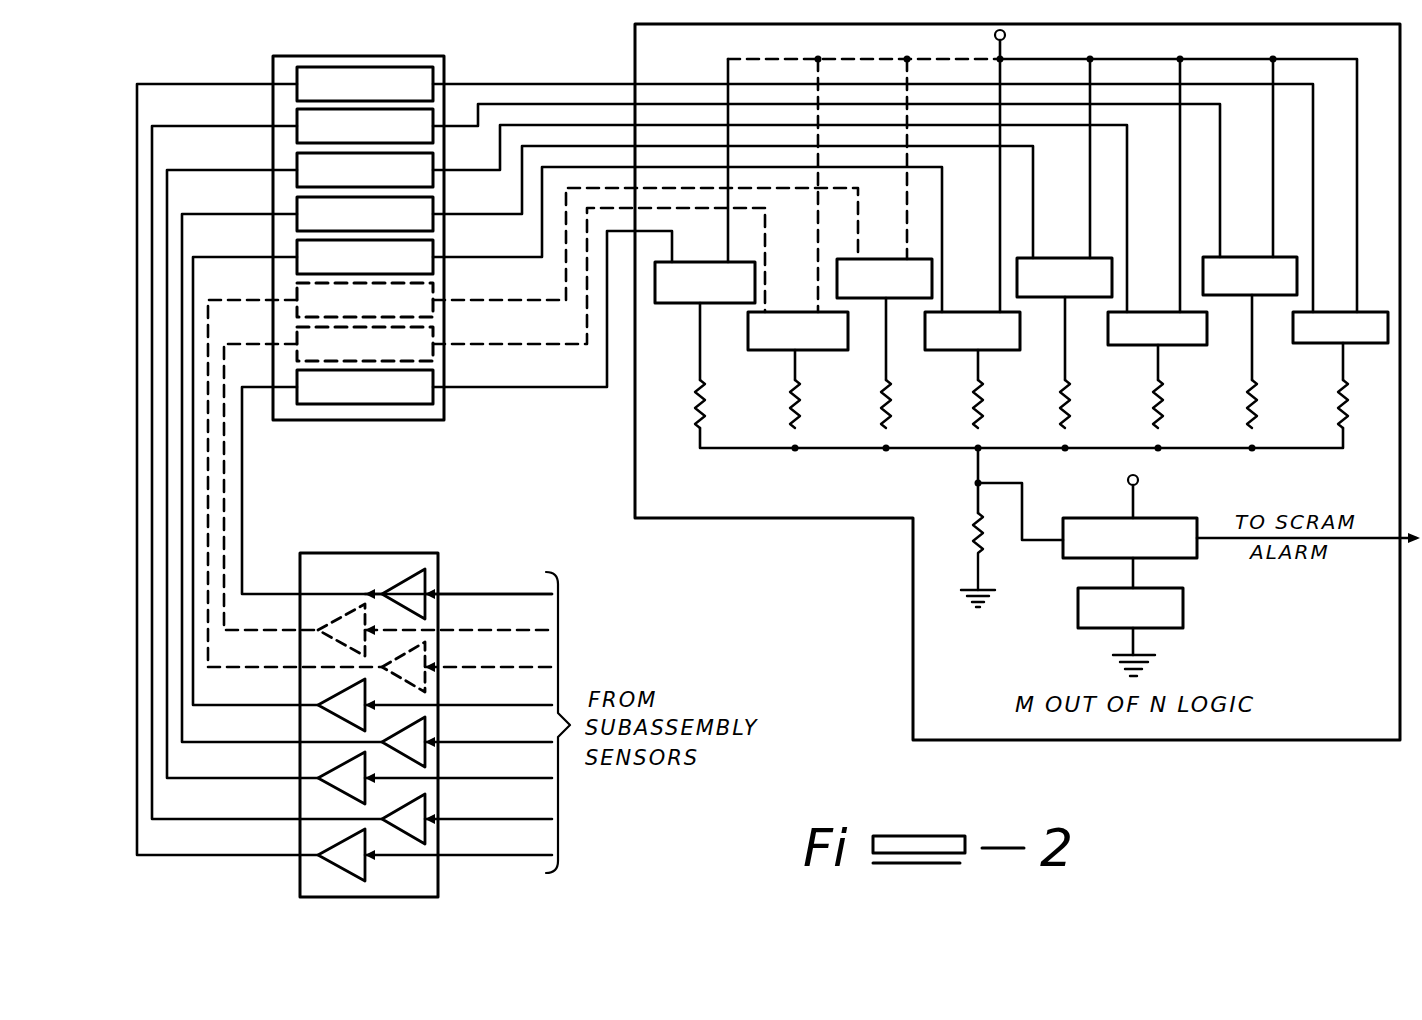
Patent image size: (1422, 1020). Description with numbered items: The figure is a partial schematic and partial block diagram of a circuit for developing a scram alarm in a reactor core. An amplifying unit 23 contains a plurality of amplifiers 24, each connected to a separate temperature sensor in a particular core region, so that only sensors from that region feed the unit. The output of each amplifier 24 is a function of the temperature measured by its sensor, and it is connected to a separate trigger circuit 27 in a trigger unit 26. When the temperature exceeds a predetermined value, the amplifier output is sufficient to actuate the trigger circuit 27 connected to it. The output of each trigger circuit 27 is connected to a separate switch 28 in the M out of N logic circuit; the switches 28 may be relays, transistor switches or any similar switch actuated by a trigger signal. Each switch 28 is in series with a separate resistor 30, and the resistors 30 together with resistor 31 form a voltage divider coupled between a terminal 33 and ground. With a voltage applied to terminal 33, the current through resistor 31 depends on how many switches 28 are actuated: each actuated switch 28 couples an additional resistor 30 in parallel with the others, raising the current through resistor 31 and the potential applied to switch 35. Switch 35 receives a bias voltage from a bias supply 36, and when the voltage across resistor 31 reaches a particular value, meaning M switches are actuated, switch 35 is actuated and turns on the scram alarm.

The amplifying unit 23 is at (375, 568).
The amplifier 24 is at (399, 721).
The trigger unit 26 is at (282, 68).
The trigger circuit 27 is at (330, 260).
The switch 28 is at (1021, 304).
The resistor 30 is at (0, 0).
The resistor 31 is at (984, 545).
The terminal 33 is at (1006, 36).
The switch 35 is at (1148, 518).
The bias supply 36 is at (1078, 612).